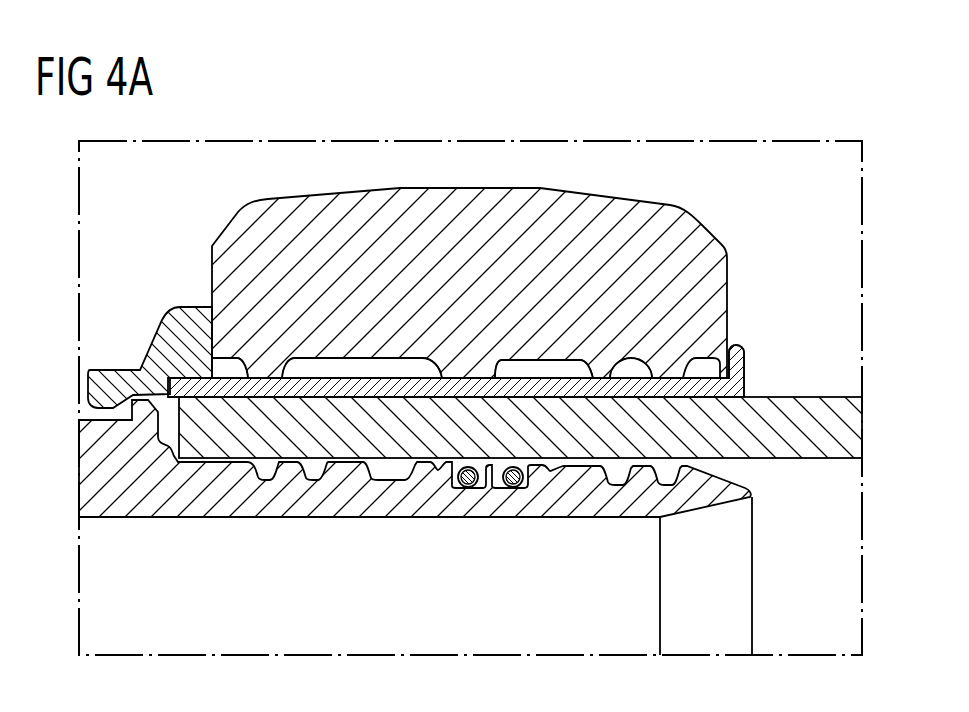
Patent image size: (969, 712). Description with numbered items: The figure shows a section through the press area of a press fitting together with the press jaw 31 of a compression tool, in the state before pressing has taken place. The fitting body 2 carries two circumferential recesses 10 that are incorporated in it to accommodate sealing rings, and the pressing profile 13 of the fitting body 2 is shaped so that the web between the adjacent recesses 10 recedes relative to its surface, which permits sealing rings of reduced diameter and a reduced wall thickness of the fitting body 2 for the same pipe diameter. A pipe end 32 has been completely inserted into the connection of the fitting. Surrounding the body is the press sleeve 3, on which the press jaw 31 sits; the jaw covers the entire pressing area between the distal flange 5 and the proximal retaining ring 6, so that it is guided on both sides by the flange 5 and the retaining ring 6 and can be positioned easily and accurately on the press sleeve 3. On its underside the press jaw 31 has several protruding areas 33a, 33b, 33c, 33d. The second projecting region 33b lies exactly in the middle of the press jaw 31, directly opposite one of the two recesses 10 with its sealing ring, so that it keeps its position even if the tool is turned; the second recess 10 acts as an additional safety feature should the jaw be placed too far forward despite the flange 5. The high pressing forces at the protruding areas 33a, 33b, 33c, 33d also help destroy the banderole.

The fitting body 2 is at (95, 467).
The press sleeve 3 is at (752, 373).
The distal flange 5 is at (750, 345).
The proximal retaining ring 6 is at (166, 332).
The circumferential recesses 10 is at (448, 488).
The pressing profile 13 is at (764, 508).
The press jaw 31 is at (652, 222).
The pipe end 32 is at (830, 445).
The protruding area 33a is at (280, 354).
The second projecting region 33b is at (454, 350).
The protruding area 33c is at (596, 360).
The protruding area 33d is at (669, 355).